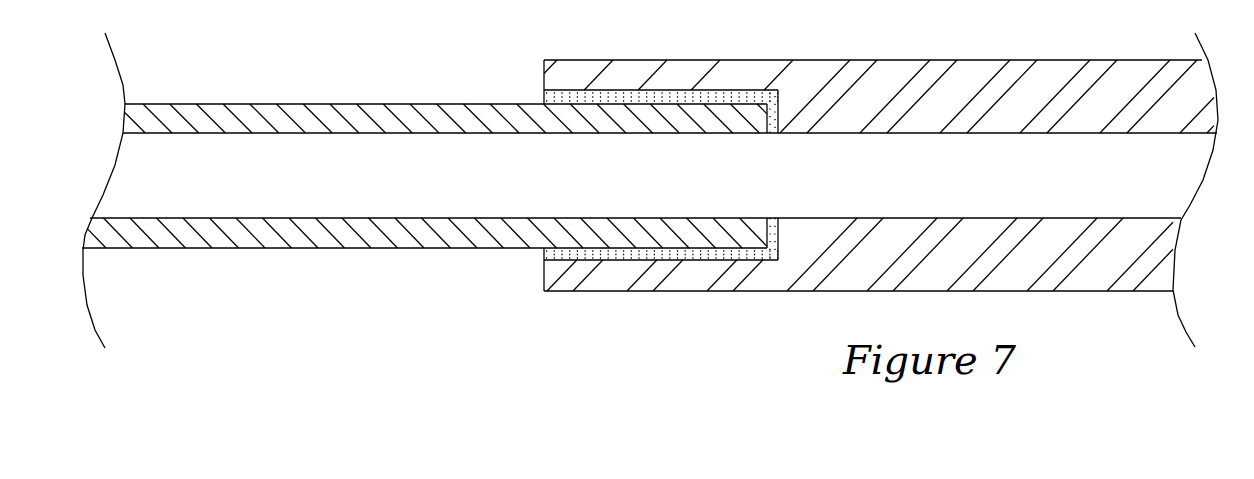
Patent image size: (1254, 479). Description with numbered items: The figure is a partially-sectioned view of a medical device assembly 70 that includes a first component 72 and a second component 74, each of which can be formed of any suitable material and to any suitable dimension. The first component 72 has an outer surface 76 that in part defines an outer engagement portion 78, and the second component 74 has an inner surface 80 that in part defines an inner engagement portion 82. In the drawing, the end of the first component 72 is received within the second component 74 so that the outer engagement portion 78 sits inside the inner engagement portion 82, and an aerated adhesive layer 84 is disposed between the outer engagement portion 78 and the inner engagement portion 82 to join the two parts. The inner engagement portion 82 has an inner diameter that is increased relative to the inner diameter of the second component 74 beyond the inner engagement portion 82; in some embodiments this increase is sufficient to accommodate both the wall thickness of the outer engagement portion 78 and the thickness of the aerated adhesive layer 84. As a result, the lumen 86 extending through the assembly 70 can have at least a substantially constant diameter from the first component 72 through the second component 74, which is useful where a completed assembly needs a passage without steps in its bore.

The assembly 70 is at (762, 318).
The first component 72 is at (430, 143).
The second component 74 is at (1050, 78).
The outer surface 76 is at (376, 104).
The outer engagement portion 78 is at (577, 100).
The inner surface 80 is at (923, 133).
The inner engagement portion 82 is at (724, 88).
The aerated adhesive layer 84 is at (623, 253).
The lumen 86 is at (495, 173).